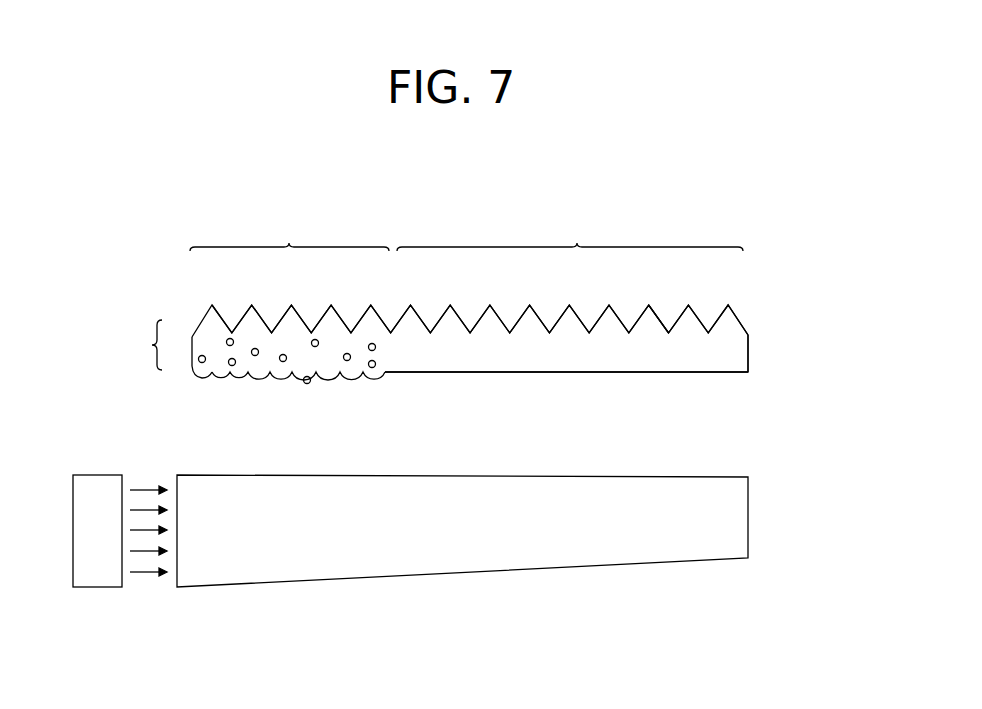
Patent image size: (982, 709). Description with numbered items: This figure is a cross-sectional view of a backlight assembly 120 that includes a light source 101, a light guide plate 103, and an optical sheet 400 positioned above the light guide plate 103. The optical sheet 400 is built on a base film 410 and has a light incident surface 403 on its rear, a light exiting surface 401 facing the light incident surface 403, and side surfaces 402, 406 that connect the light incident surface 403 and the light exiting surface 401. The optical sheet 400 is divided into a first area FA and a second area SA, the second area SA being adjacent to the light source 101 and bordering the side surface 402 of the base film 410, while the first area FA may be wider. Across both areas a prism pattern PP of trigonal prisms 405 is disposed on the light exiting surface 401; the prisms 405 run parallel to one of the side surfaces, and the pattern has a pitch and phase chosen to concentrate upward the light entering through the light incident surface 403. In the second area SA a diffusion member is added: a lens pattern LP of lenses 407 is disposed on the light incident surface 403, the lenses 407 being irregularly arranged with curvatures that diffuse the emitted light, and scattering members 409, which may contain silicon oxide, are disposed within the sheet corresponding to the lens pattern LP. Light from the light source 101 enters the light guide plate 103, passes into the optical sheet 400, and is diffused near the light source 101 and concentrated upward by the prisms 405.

The backlight assembly 120 is at (468, 294).
The optical sheet 400 is at (705, 360).
The light exiting surface 401 is at (738, 318).
The side surface 402 is at (191, 337).
The light incident surface 403 is at (625, 374).
The prism 405 is at (663, 325).
The side surface 406 is at (748, 347).
The lens 407 is at (228, 378).
The scattering member 409 is at (299, 382).
The base film 410 is at (135, 345).
The light guide plate 103 is at (746, 515).
The light source 101 is at (95, 587).